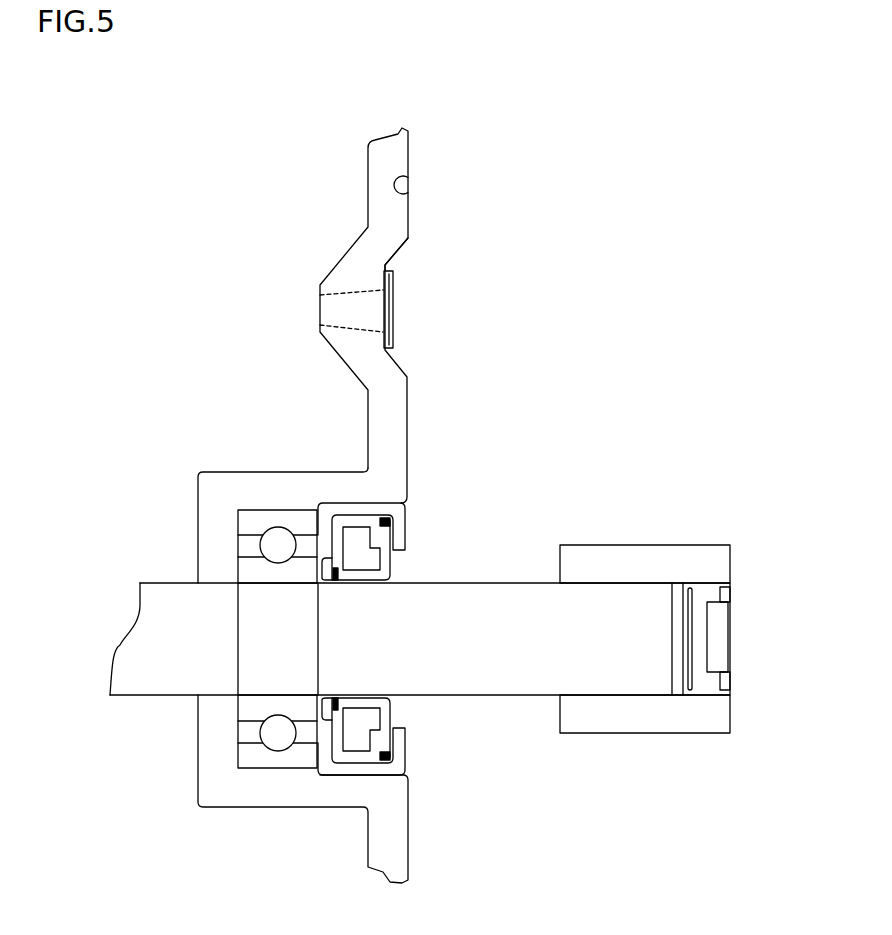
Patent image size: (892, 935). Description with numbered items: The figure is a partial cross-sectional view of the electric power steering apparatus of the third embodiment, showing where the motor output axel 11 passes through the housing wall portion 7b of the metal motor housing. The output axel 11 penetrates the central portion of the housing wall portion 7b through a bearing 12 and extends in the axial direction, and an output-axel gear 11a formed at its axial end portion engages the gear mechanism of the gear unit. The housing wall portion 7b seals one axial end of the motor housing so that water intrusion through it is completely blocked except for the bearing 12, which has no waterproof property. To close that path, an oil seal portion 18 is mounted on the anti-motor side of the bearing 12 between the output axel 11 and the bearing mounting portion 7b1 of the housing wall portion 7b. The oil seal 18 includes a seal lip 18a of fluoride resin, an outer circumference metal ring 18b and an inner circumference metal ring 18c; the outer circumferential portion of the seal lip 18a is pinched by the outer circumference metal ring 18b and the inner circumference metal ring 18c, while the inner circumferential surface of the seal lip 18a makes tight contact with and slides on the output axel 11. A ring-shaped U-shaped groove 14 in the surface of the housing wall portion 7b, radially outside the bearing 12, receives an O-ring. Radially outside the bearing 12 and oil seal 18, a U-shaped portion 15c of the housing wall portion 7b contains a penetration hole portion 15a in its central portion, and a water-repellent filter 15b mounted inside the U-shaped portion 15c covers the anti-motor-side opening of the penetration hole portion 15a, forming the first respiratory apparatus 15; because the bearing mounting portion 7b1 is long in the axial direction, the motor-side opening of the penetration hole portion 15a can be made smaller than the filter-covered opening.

The housing wall portion 7b is at (359, 501).
The bearing mounting portion 7b1 is at (257, 477).
The U-shaped groove 14 is at (410, 187).
The first respiratory apparatus 15 is at (372, 280).
The penetration hole portion 15a is at (362, 298).
The filter 15b is at (395, 310).
The U-shaped portion 15c is at (400, 250).
The output axel 11 is at (420, 578).
The output-axel gear 11a is at (640, 552).
The bearing 12 is at (262, 762).
The oil seal portion 18 is at (370, 584).
The seal lip 18a is at (380, 568).
The outer circumference metal ring 18b is at (407, 518).
The inner circumference metal ring 18c is at (355, 512).